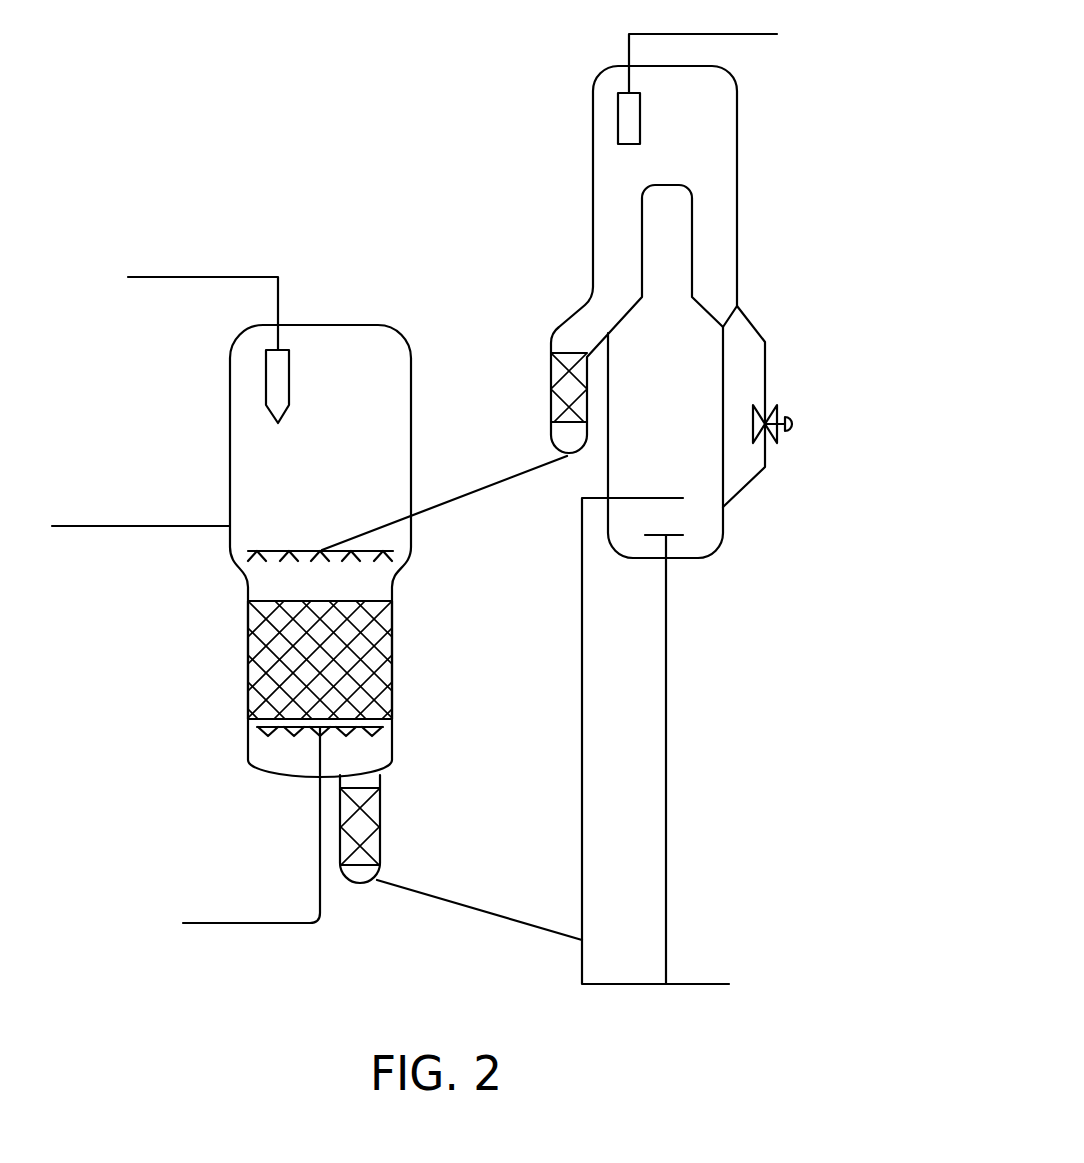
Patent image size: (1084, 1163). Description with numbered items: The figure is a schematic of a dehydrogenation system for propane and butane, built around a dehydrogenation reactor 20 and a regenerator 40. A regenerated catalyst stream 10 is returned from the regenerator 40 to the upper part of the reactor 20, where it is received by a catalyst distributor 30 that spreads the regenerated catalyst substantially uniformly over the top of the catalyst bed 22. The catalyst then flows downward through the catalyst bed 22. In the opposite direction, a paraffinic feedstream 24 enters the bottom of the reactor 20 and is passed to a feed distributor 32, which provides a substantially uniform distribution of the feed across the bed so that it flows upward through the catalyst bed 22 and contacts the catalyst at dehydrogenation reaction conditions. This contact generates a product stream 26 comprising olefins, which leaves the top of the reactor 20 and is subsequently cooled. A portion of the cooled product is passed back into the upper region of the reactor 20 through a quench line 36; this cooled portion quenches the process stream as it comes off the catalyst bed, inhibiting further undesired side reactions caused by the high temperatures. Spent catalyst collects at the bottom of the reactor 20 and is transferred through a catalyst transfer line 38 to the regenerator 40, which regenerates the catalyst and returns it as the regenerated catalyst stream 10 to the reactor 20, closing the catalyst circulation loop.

The regenerated catalyst stream 10 is at (474, 492).
The dehydrogenation reactor 20 is at (230, 417).
The catalyst bed 22 is at (265, 676).
The paraffinic feedstream 24 is at (238, 921).
The product stream 26 is at (203, 276).
The catalyst distributor 30 is at (273, 549).
The feed distributor 32 is at (280, 738).
The quench line 36 is at (106, 527).
The catalyst transfer line 38 is at (467, 905).
The regenerator 40 is at (737, 197).